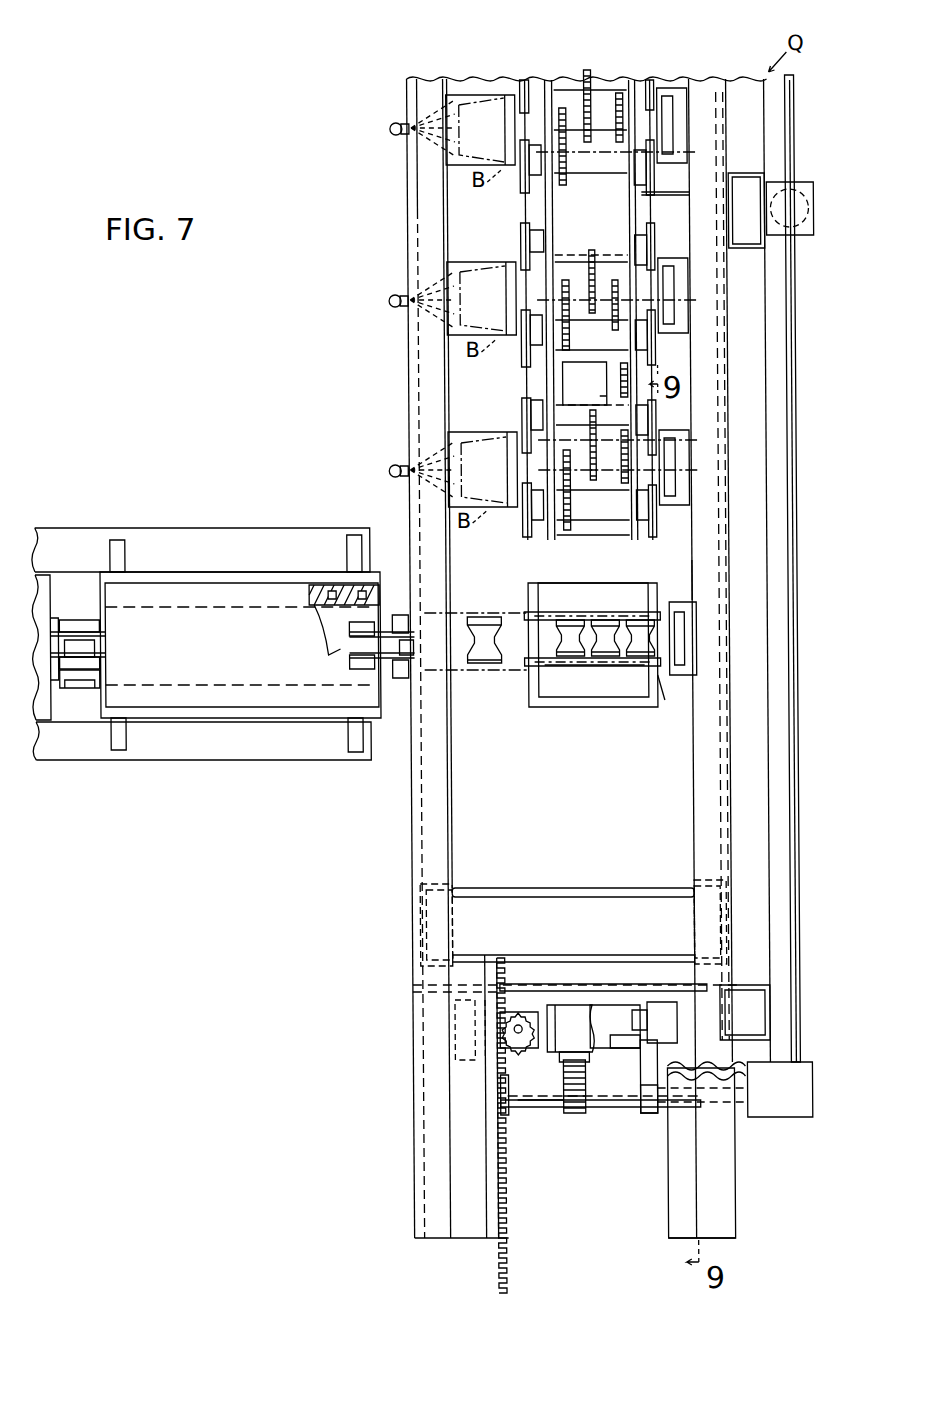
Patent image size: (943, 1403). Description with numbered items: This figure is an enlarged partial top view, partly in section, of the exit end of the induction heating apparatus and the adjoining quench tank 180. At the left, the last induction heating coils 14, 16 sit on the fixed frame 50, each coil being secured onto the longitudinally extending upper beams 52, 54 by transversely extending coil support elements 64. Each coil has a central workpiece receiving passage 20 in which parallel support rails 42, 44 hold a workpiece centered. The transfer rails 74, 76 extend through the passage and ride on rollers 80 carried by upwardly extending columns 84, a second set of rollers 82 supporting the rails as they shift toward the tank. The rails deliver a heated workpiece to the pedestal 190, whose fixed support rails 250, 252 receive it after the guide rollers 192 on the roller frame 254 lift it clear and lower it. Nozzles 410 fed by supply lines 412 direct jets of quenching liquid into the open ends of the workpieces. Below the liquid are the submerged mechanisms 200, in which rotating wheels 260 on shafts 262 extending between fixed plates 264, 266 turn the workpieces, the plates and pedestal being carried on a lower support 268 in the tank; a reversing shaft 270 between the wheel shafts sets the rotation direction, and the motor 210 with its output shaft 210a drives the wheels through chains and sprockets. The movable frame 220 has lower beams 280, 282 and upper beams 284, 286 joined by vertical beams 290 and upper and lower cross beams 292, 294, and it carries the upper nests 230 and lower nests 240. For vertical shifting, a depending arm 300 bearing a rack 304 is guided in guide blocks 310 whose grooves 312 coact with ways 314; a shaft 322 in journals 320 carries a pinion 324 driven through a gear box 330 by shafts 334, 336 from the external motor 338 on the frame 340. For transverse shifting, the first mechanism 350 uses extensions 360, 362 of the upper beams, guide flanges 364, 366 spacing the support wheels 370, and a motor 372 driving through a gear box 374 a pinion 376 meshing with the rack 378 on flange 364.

The induction heating coil 14 is at (38, 570).
The induction heating coil 16 is at (270, 578).
The workpiece receiving passage 20 is at (338, 585).
The support rail 42 is at (64, 686).
The support rail 44 is at (44, 621).
The fixed frame 50 is at (220, 518).
The upper beam 52 is at (272, 760).
The upper beam 54 is at (246, 528).
The coil support element 64 is at (121, 555).
The transfer rail 74 is at (347, 624).
The transfer rail 76 is at (346, 662).
The roller 80 is at (68, 618).
The roller 82 is at (480, 618).
The column 84 is at (91, 646).
The tank 180 is at (405, 95).
The pedestal 190 is at (572, 606).
The guide roller 192 is at (590, 616).
The submerged mechanism 200 is at (654, 82).
The motor 210 is at (574, 364).
The output shaft 210a is at (604, 395).
The movable frame 220 is at (506, 879).
The upper nest 230 is at (676, 659).
The lower nest 240 is at (504, 95).
The support rail 250 is at (660, 676).
The support rail 252 is at (674, 604).
The roller frame 254 is at (628, 668).
The rotating wheel 260 is at (526, 80).
The shaft 262 is at (568, 174).
The fixed plate 264 is at (533, 240).
The fixed plate 266 is at (674, 198).
The frame post 268 is at (686, 575).
The reversing shaft 270 is at (580, 122).
The lower beam 280 is at (720, 830).
The lower beam 282 is at (434, 198).
The upper beam 284 is at (689, 806).
The upper beam 286 is at (445, 826).
The vertical beam 290 is at (720, 920).
The upper cross beam 292 is at (595, 908).
The lower cross beam 294 is at (577, 888).
The depending arm 300 is at (604, 1048).
The rack 304 is at (606, 1104).
The guide block 310 is at (633, 989).
The groove 312 is at (642, 1020).
The way 314 is at (650, 1046).
The journal 320 is at (507, 1111).
The shaft 322 is at (543, 1104).
The pinion 324 is at (576, 1114).
The gear box 330 is at (804, 1094).
The shaft 334 is at (792, 791).
The shaft 336 is at (789, 127).
The motor 338 is at (806, 203).
The frame 340 is at (768, 327).
The first mechanism 350 is at (546, 983).
The extension 360 is at (730, 1154).
The extension 362 is at (408, 1074).
The guide flange 364 is at (675, 1210).
The guide flange 366 is at (730, 1082).
The support wheel 370 is at (448, 1020).
The motor 372 is at (568, 1006).
The gear box 374 is at (512, 1012).
The pinion 376 is at (527, 1048).
The rack 378 is at (502, 1194).
The nozzle 410 is at (398, 124).
The supply line 412 is at (392, 138).